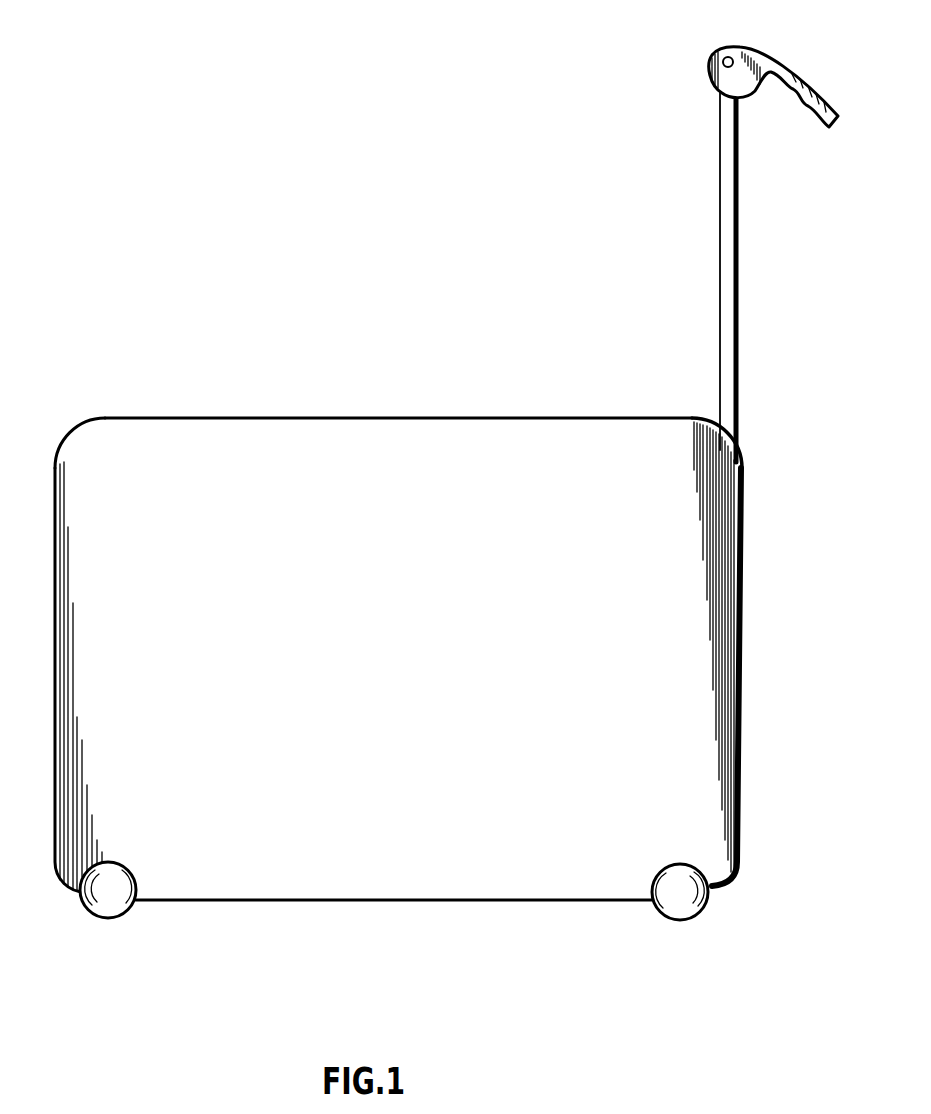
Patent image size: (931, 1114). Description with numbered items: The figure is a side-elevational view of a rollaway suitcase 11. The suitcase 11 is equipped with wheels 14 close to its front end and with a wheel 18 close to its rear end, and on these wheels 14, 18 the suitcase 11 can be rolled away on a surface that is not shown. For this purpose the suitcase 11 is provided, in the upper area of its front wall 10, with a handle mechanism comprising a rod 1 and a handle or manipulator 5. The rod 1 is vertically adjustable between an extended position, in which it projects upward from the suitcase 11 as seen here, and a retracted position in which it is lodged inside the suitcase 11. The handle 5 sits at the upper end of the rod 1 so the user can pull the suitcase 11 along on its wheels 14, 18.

The rod 1 is at (733, 297).
The handle 5 is at (752, 62).
The front wall 10 is at (746, 562).
The suitcase 11 is at (394, 928).
The wheels 14 is at (687, 907).
The wheel 18 is at (100, 897).